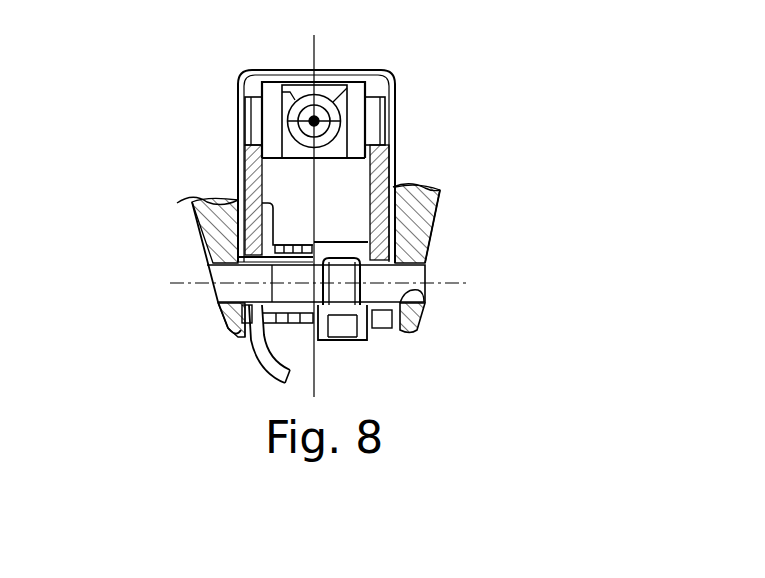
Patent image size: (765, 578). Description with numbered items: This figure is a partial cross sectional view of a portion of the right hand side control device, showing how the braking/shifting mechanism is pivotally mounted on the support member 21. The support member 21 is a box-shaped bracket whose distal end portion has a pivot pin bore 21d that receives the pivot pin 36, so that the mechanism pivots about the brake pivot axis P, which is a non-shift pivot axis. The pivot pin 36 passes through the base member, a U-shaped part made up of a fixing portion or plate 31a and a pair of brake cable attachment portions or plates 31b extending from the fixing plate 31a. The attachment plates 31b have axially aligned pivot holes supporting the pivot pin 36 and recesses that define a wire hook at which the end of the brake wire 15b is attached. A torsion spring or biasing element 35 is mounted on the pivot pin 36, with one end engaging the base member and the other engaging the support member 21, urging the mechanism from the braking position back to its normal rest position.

The brake wire 15b is at (368, 77).
The brake cable attachment portions or plates 31b is at (243, 168).
The fixing portion or plate 31a is at (360, 188).
The support member 21 is at (435, 193).
The pivot pin 36 is at (425, 273).
The pivot pin bore 21d is at (423, 293).
The brake pivot axis P is at (198, 282).
The torsion spring or biasing element 35 is at (282, 322).